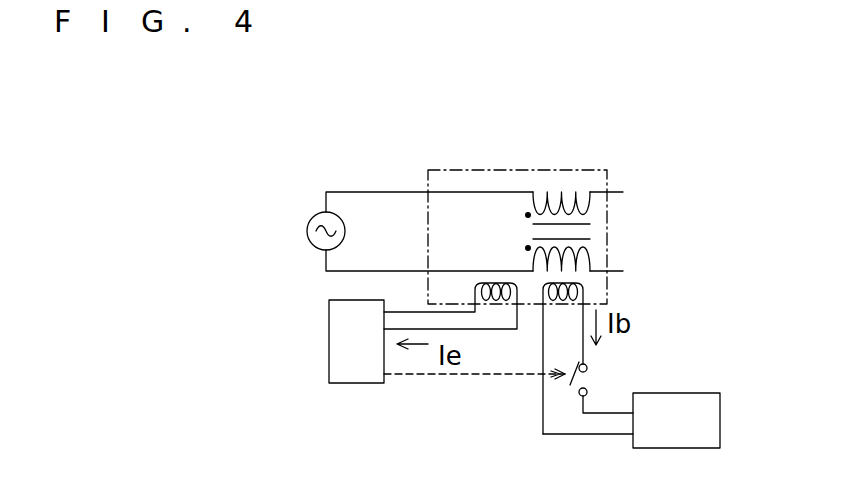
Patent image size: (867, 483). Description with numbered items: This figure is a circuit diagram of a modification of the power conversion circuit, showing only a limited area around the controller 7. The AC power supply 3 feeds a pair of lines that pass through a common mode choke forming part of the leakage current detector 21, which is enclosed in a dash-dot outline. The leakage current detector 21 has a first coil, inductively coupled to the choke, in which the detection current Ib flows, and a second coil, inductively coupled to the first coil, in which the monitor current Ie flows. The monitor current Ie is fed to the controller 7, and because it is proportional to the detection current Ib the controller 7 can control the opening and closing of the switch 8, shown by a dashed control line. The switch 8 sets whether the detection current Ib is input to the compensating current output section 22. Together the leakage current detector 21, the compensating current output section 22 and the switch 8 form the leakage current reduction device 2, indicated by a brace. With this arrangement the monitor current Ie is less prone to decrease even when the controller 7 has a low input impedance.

The leakage current reduction device 2 is at (599, 309).
The AC power supply 3 is at (307, 222).
The controller 7 is at (329, 350).
The switch 8 is at (594, 383).
The leakage current detector 21 is at (608, 288).
The compensating current output section 22 is at (678, 393).